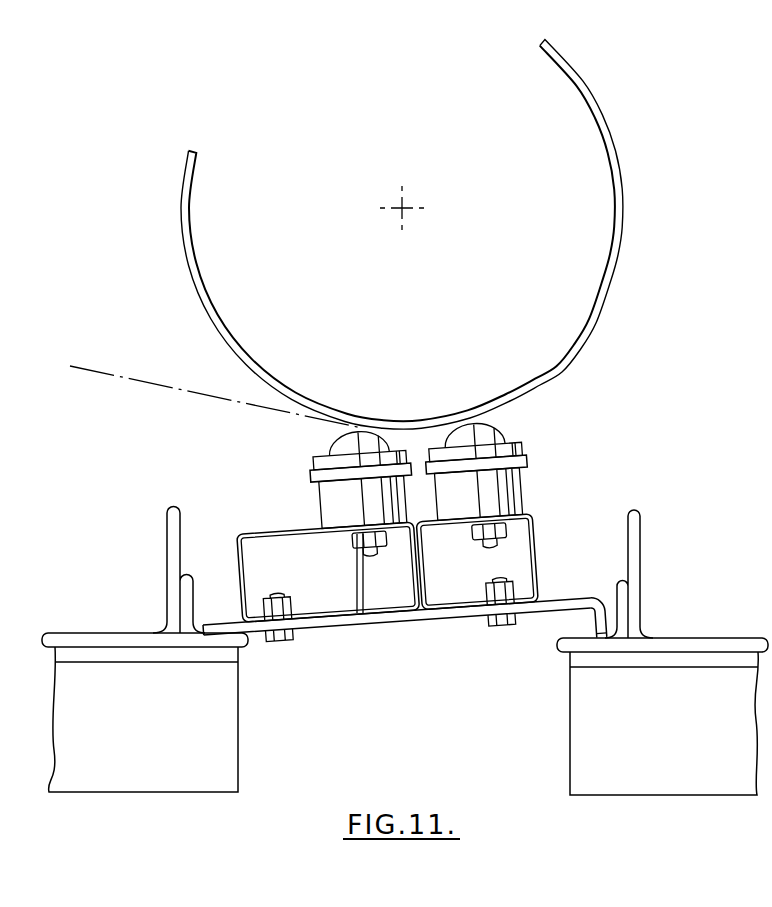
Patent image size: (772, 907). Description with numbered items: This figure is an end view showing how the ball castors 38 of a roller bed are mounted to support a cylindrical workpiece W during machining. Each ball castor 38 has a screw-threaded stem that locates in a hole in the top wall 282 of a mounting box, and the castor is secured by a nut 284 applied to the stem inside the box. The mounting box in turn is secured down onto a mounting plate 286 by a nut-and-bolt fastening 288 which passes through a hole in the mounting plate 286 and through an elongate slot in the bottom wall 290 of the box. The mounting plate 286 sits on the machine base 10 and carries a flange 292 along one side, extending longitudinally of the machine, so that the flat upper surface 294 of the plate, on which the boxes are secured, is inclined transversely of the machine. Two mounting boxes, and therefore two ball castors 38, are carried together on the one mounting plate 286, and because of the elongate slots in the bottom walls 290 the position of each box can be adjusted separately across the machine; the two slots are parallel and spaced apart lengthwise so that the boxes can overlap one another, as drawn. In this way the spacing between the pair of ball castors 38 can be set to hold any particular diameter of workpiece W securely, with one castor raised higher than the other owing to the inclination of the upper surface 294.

The workpiece W is at (622, 213).
The machine base 10 is at (227, 750).
The ball castor 38 is at (332, 441).
The top wall of mounting box 282 is at (273, 533).
The nut 284 is at (353, 542).
The mounting plate 286 is at (323, 622).
The nut-and-bolt fastening 288 is at (280, 641).
The bottom wall of mounting box 290 is at (430, 605).
The flange 292 is at (597, 617).
The flat upper surface of mounting plate 294 is at (567, 597).